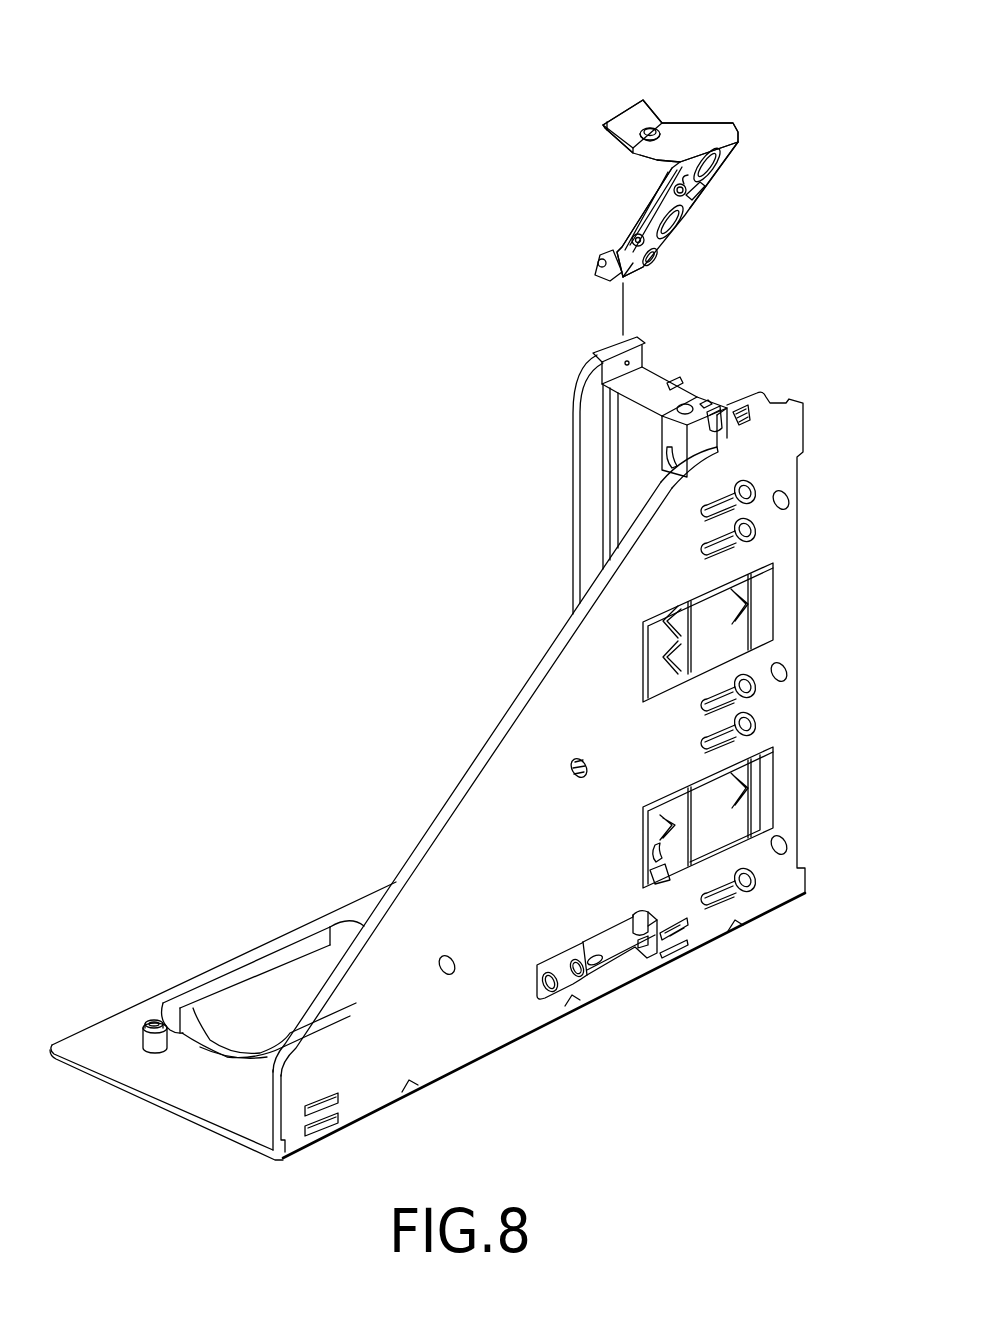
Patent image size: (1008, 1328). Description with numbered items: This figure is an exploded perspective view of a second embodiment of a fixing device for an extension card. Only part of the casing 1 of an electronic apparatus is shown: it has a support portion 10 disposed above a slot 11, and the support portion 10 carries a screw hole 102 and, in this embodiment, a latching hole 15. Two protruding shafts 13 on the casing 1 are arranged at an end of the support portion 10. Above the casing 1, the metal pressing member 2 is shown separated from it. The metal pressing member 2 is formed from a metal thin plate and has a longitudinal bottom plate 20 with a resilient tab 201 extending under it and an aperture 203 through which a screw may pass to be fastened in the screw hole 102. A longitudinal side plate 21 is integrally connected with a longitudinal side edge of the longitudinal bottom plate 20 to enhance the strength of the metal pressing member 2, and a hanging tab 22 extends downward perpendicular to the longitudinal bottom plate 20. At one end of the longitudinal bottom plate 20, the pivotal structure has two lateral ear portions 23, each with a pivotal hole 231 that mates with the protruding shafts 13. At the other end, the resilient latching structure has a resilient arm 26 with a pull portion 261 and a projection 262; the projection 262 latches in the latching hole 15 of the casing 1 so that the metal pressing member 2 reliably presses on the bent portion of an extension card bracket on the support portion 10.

The casing 1 is at (183, 1120).
The metal pressing member 2 is at (699, 116).
The support portion 10 is at (698, 397).
The screw hole 102 is at (733, 392).
The slot 11 is at (718, 790).
The protruding shafts 13 is at (645, 340).
The latching hole 15 is at (752, 419).
The longitudinal bottom plate 20 is at (709, 203).
The resilient tab 201 is at (704, 190).
The aperture 203 is at (735, 154).
The longitudinal side plate 21 is at (650, 215).
The hanging tab 22 is at (693, 208).
The lateral ear portions 23 is at (634, 276).
The pivotal hole 231 is at (597, 261).
The resilient arm 26 is at (708, 137).
The pull portion 261 is at (630, 120).
The projection 262 is at (657, 129).